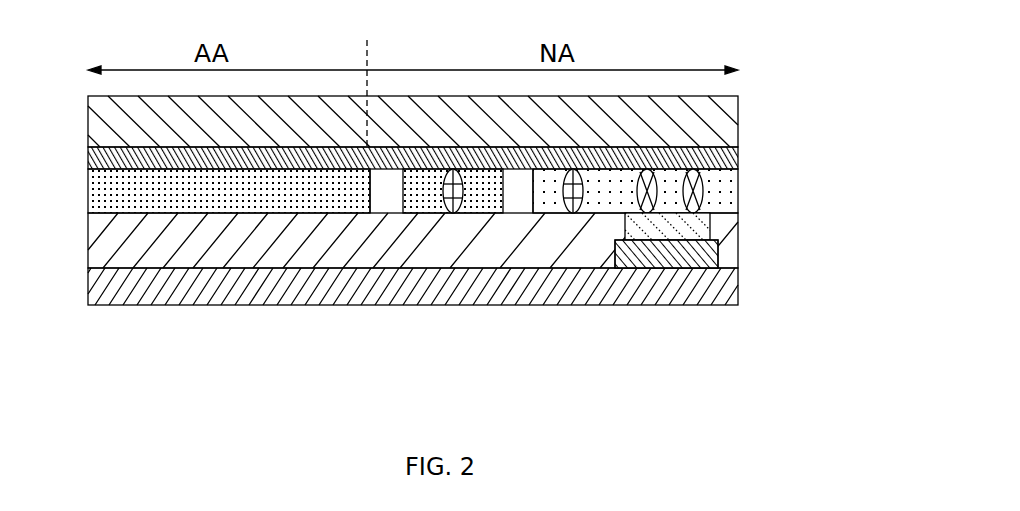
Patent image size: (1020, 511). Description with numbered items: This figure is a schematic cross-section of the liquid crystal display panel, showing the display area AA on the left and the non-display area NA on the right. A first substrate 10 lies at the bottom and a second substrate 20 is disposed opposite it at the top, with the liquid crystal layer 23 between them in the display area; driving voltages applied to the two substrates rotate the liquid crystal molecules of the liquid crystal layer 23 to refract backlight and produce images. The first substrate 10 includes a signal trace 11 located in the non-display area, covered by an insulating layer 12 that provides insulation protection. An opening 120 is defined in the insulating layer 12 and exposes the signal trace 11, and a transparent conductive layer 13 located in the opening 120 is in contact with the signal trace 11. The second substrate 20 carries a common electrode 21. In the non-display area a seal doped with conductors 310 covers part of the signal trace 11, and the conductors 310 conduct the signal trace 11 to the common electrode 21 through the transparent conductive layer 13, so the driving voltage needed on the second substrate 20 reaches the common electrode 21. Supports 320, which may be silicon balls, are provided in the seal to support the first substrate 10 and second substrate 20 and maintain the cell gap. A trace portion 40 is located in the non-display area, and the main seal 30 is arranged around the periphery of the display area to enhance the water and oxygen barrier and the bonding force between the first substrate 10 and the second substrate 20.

The first substrate 10 is at (479, 262).
The signal trace 11 is at (715, 280).
The insulating layer 12 is at (728, 262).
The transparent conductive layer 13 is at (718, 262).
The second substrate 20 is at (732, 115).
The common electrode 21 is at (738, 151).
The liquid crystal layer 23 is at (90, 190).
The main seal 30 is at (730, 195).
The trace portion 40 is at (498, 213).
The opening 120 is at (697, 224).
The conductors 310 is at (700, 174).
The supports 320 is at (455, 213).